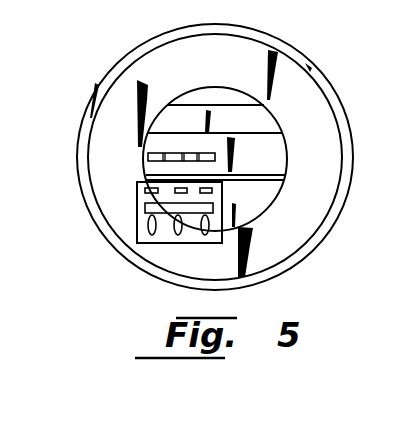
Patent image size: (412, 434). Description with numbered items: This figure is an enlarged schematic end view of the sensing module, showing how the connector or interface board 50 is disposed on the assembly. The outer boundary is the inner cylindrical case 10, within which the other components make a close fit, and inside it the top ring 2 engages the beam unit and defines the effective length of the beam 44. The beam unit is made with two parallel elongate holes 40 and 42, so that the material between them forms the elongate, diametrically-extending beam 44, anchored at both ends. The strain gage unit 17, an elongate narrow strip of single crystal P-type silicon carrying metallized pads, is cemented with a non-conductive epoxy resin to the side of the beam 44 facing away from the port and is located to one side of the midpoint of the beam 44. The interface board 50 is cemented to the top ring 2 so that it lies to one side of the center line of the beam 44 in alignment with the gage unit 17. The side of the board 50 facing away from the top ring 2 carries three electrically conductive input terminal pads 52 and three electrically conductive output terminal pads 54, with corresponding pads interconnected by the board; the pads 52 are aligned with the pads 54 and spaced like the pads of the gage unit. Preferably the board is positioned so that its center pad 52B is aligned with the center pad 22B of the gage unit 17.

The top ring 2 is at (177, 47).
The inner cylindrical case 10 is at (118, 63).
The strain gage unit 17 is at (168, 148).
The center pad 22B is at (180, 152).
The elongate hole 40 is at (238, 117).
The elongate hole 42 is at (257, 187).
The beam 44 is at (257, 131).
The interface board 50 is at (137, 217).
The input terminal pads 52 is at (143, 190).
The center pad 52B is at (183, 191).
The output terminal pads 54 is at (200, 233).